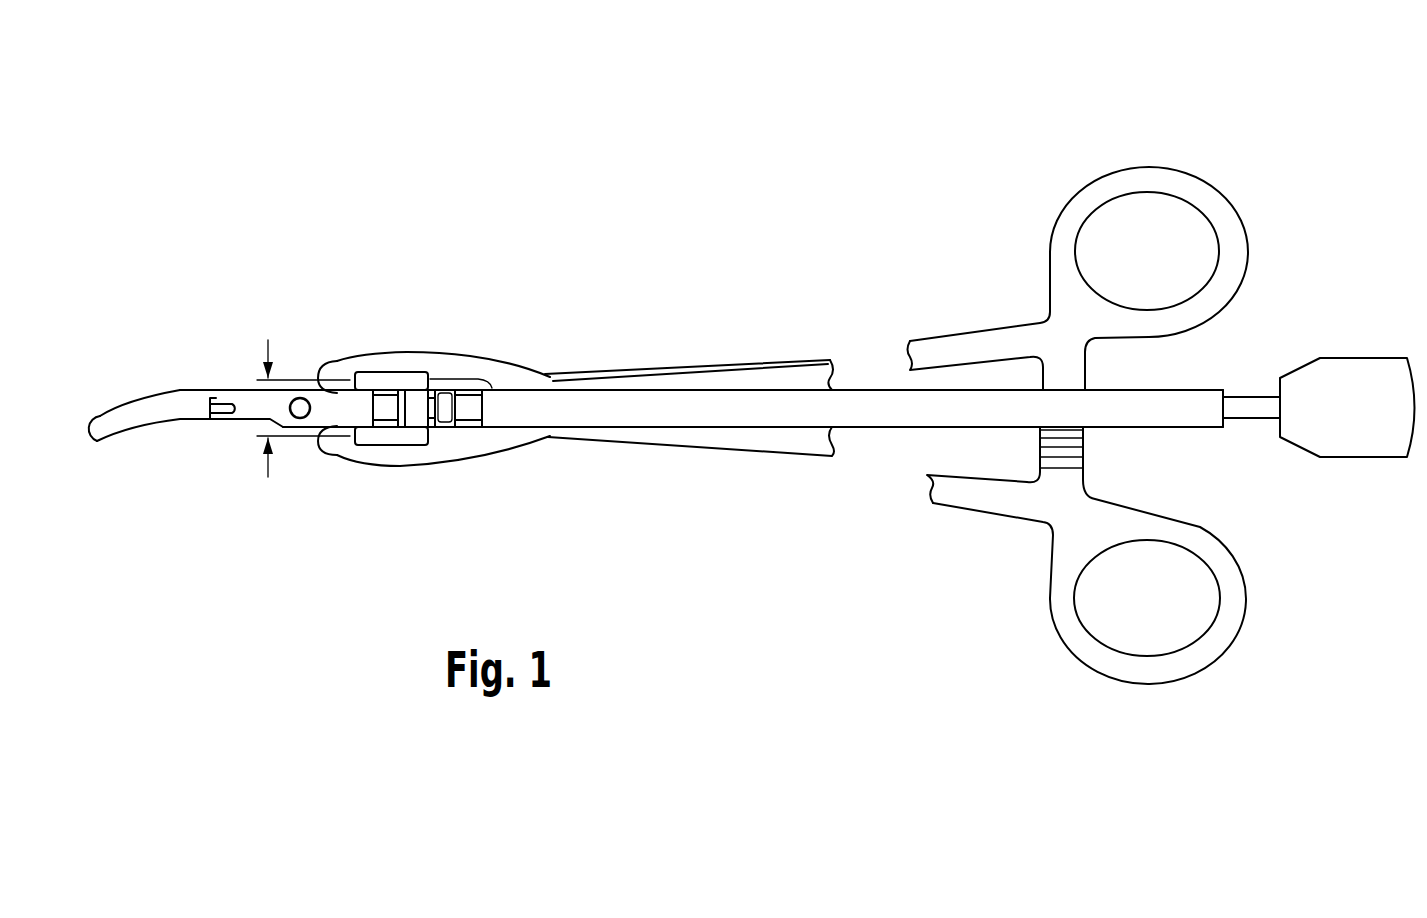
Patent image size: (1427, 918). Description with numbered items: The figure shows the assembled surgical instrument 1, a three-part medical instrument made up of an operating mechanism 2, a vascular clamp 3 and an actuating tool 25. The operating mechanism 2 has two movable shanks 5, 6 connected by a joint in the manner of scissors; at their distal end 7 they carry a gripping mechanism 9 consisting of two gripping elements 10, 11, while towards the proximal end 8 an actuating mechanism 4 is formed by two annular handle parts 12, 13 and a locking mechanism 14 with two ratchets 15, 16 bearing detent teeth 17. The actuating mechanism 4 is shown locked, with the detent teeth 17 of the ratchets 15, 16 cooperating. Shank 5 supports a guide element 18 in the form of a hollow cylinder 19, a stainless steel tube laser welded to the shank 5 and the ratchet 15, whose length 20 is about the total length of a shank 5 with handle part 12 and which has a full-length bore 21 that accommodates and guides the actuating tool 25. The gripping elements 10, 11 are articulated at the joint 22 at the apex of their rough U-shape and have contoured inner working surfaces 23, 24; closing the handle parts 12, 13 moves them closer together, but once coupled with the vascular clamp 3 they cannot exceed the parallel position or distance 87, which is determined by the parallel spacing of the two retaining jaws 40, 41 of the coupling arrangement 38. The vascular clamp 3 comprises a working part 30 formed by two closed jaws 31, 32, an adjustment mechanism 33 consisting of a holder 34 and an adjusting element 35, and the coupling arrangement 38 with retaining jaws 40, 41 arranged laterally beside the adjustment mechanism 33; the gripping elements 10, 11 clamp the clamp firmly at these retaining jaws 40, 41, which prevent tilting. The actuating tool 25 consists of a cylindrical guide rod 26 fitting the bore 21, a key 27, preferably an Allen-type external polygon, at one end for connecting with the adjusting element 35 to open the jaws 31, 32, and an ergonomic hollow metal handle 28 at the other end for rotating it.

The surgical instrument 1 is at (352, 195).
The operating mechanism 2 is at (667, 352).
The vascular clamp 3 is at (302, 357).
The actuating mechanism 4 is at (1170, 160).
The shank 5 is at (950, 350).
The shank 6 is at (960, 496).
The distal end 7 is at (519, 369).
The proximal end 8 is at (1033, 320).
The gripping mechanism 9 is at (422, 325).
The gripping element 10 is at (347, 357).
The gripping element 11 is at (352, 450).
The handle part 12 is at (1205, 200).
The handle part 13 is at (1217, 643).
The locking mechanism 14 is at (1105, 452).
The ratchet 15 is at (1070, 373).
The ratchet 16 is at (1067, 487).
The detent teeth 17 is at (1047, 452).
The guide element 18 is at (712, 409).
The hollow cylinder 19 is at (643, 417).
The length 20 is at (1212, 395).
The bore 21 is at (1227, 392).
The joint 22 is at (556, 377).
The working surface 23 is at (333, 382).
The working surface 24 is at (317, 427).
The actuating tool 25 is at (1340, 318).
The cylindrical guide rod 26 is at (1245, 413).
The key 27 is at (472, 405).
The handle 28 is at (1352, 440).
The working part 30 is at (148, 382).
The jaw 31 is at (100, 420).
The jaw 32 is at (143, 420).
The adjustment mechanism 33 is at (437, 382).
The holder 34 is at (433, 418).
The adjusting element 35 is at (457, 413).
The coupling arrangement 38 is at (420, 450).
The retaining jaw 40 is at (383, 372).
The retaining jaw 41 is at (397, 445).
The distance 87 is at (256, 376).